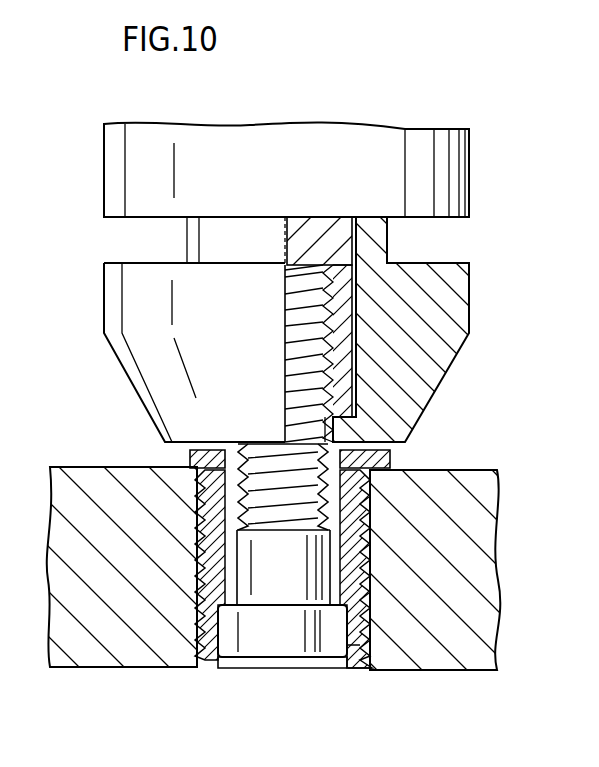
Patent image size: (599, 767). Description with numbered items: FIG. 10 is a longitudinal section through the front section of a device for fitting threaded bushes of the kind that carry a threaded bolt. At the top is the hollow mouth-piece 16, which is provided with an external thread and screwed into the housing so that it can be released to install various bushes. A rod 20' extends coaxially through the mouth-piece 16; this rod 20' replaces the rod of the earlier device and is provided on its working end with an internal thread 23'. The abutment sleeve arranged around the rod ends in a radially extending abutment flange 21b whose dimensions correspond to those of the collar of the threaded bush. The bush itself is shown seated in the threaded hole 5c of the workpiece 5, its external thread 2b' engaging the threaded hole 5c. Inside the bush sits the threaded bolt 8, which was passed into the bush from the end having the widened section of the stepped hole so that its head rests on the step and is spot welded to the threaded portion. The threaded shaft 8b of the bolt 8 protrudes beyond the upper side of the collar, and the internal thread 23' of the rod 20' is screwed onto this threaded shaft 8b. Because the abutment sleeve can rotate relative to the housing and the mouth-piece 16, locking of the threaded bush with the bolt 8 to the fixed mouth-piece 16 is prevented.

The mouth-piece 16 is at (458, 173).
The abutment flange 21b is at (456, 290).
The internal thread 23' is at (416, 353).
The rod 20' is at (400, 419).
The threaded hole 5c is at (366, 492).
The workpiece 5 is at (462, 546).
The threaded shaft 8b is at (297, 505).
The threaded bolt 8 is at (265, 662).
The external thread 2b' is at (369, 683).